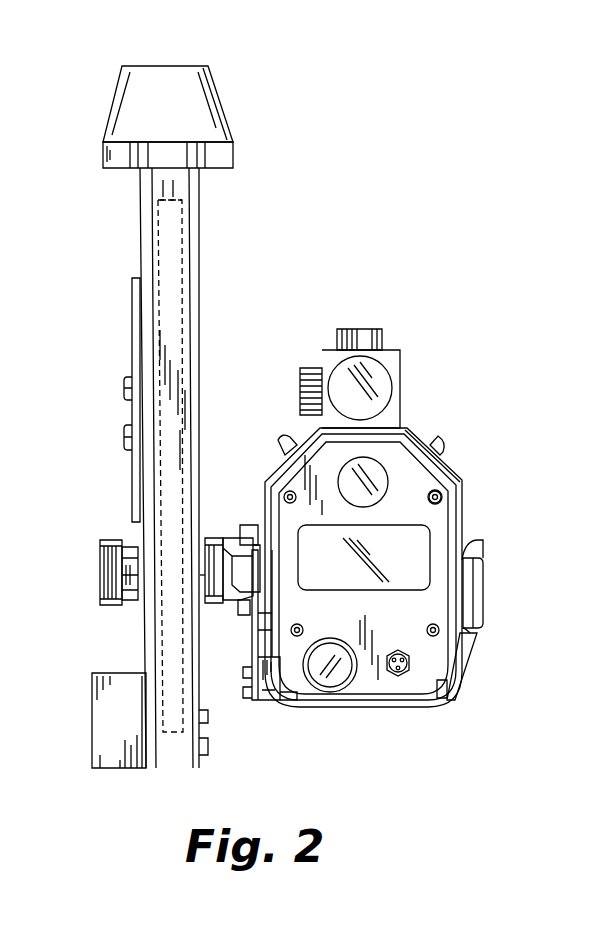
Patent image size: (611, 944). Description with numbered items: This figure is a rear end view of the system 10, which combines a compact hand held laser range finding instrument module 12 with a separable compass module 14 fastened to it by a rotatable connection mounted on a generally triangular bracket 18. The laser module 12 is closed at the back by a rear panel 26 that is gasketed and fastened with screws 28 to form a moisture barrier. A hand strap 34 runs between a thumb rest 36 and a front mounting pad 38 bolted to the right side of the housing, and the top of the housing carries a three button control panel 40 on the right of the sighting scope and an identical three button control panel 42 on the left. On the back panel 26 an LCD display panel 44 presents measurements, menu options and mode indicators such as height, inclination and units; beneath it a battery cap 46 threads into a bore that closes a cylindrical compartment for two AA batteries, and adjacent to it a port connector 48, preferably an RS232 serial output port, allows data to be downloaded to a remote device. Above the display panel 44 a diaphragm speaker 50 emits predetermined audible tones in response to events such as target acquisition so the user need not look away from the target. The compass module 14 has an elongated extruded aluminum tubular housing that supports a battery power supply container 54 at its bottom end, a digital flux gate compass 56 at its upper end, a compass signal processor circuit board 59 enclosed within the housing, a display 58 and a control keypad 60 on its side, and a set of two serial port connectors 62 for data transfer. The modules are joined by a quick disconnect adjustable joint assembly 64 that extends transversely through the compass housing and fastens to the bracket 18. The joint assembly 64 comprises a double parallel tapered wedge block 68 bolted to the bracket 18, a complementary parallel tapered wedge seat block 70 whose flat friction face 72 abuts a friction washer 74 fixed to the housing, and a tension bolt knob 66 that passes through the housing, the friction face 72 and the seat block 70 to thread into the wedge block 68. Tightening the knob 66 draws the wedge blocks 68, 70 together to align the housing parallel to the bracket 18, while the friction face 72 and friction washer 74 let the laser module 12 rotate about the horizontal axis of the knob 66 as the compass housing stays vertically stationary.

The system 10 is at (358, 200).
The laser range finding instrument module 12 is at (406, 425).
The compass module 14 is at (201, 232).
The triangular bracket 18 is at (258, 700).
The rear panel 26 is at (418, 470).
The screws 28 is at (441, 497).
The hand strap 34 is at (484, 615).
The thumb rest 36 is at (265, 548).
The front mounting pad 38 is at (282, 700).
The three button control panel 40 is at (436, 440).
The three button control panel 42 is at (278, 442).
The LCD display panel 44 is at (410, 572).
The battery cap 46 is at (330, 672).
The port connector 48 is at (398, 672).
The diaphragm speaker 50 is at (348, 475).
The battery power supply container 54 is at (103, 748).
The digital flux gate compass 56 is at (200, 100).
The display 58 is at (132, 280).
The compass signal processor circuit board 59 is at (160, 212).
The control keypad 60 is at (124, 412).
The serial port connectors 62 is at (215, 728).
The adjustable joint assembly 64 is at (219, 535).
The tension bolt knob 66 is at (103, 545).
The double parallel tapered wedge block 68 is at (245, 538).
The parallel tapered wedge seat block 70 is at (222, 600).
The flat friction face 72 is at (207, 575).
The friction washer 74 is at (206, 540).